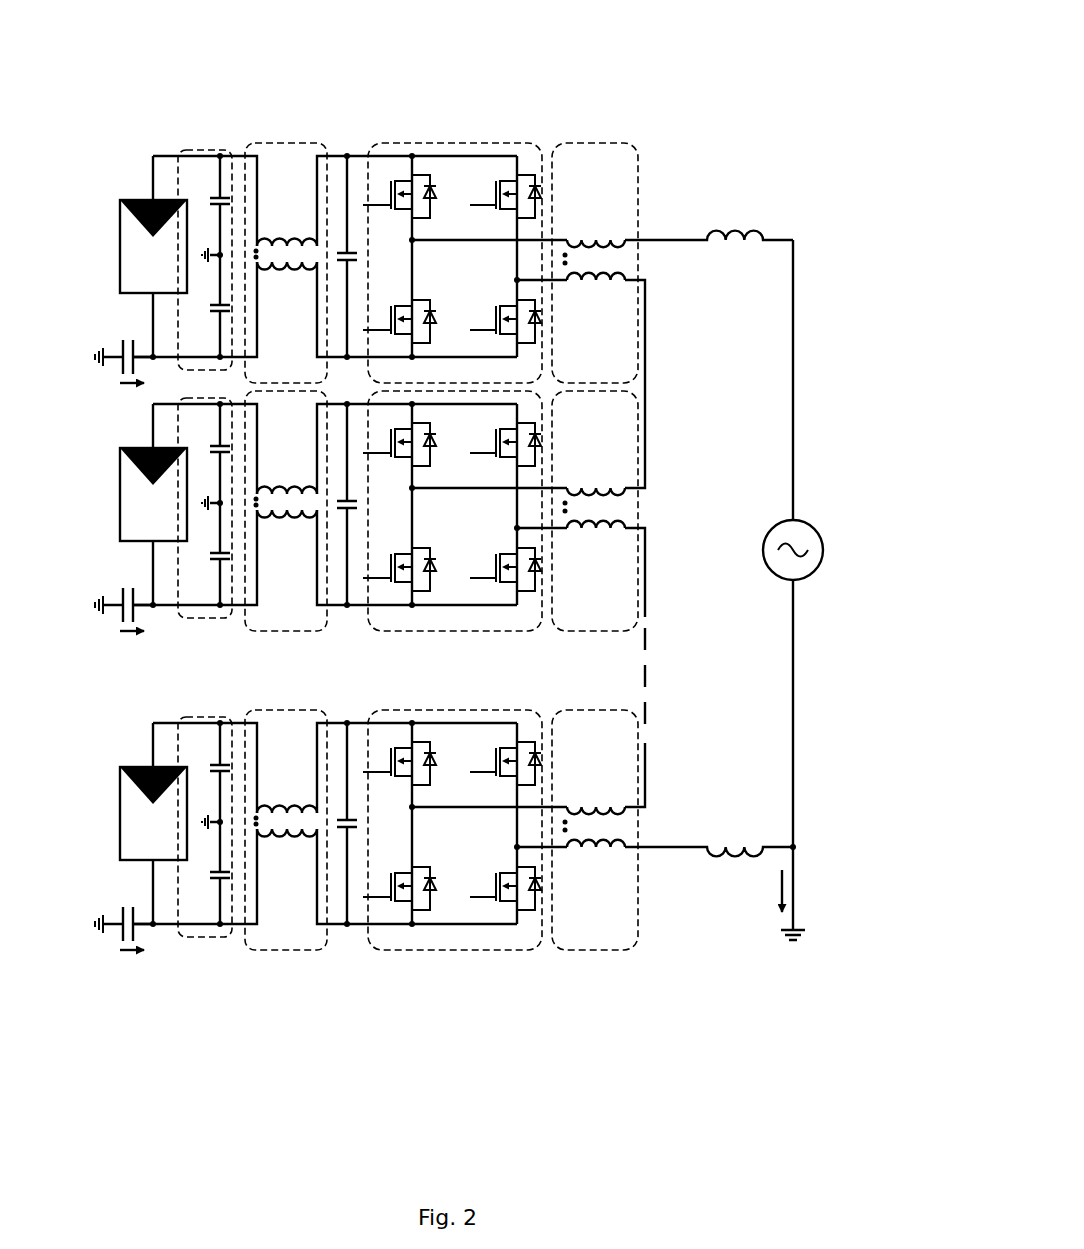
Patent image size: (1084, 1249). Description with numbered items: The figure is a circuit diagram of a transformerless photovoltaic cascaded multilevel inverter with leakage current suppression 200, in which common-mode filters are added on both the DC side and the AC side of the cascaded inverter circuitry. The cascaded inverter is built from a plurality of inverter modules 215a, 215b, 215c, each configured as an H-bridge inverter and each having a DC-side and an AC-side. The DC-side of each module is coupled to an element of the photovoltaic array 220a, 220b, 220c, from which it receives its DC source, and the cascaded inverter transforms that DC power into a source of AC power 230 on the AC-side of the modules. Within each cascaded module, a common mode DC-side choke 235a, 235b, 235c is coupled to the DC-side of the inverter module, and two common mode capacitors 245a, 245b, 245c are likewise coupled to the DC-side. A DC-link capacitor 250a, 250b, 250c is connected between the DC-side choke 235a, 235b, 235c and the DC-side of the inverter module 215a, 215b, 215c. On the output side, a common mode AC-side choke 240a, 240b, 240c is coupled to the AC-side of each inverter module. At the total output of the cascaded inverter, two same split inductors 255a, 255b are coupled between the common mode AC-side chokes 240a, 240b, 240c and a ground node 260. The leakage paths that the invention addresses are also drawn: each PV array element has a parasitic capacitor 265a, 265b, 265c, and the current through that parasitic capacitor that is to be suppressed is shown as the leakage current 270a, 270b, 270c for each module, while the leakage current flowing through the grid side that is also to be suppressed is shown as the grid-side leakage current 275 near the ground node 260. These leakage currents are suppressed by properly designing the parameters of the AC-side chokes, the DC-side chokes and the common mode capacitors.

The photovoltaic cascaded multilevel inverter 200 is at (704, 65).
The inverter module 215a is at (467, 143).
The inverter module 215b is at (443, 634).
The inverter module 215c is at (443, 944).
The photovoltaic array 220a is at (116, 242).
The photovoltaic array 220b is at (116, 490).
The photovoltaic array 220c is at (116, 809).
The source of AC power 230 is at (832, 542).
The common mode DC-side choke 235a is at (292, 142).
The common mode DC-side choke 235b is at (303, 634).
The common mode DC-side choke 235c is at (303, 944).
The common mode AC-side choke 240a is at (593, 143).
The common mode AC-side choke 240b is at (612, 634).
The common mode AC-side choke 240c is at (600, 944).
The common mode capacitors 245a is at (198, 150).
The common mode capacitors 245b is at (230, 626).
The common mode capacitors 245c is at (230, 944).
The DC-link capacitor 250a is at (353, 246).
The DC-link capacitor 250b is at (338, 494).
The DC-link capacitor 250c is at (338, 810).
The split inductor 255a is at (760, 213).
The split inductor 255b is at (757, 836).
The ground node 260 is at (807, 933).
The parasitic capacitor 265a is at (82, 356).
The parasitic capacitor 265b is at (82, 604).
The parasitic capacitor 265c is at (82, 923).
The leakage current through parasitic capacitor 270a is at (132, 392).
The leakage current through parasitic capacitor 270b is at (132, 641).
The leakage current through parasitic capacitor 270c is at (163, 962).
The grid-side leakage current 275 is at (757, 912).